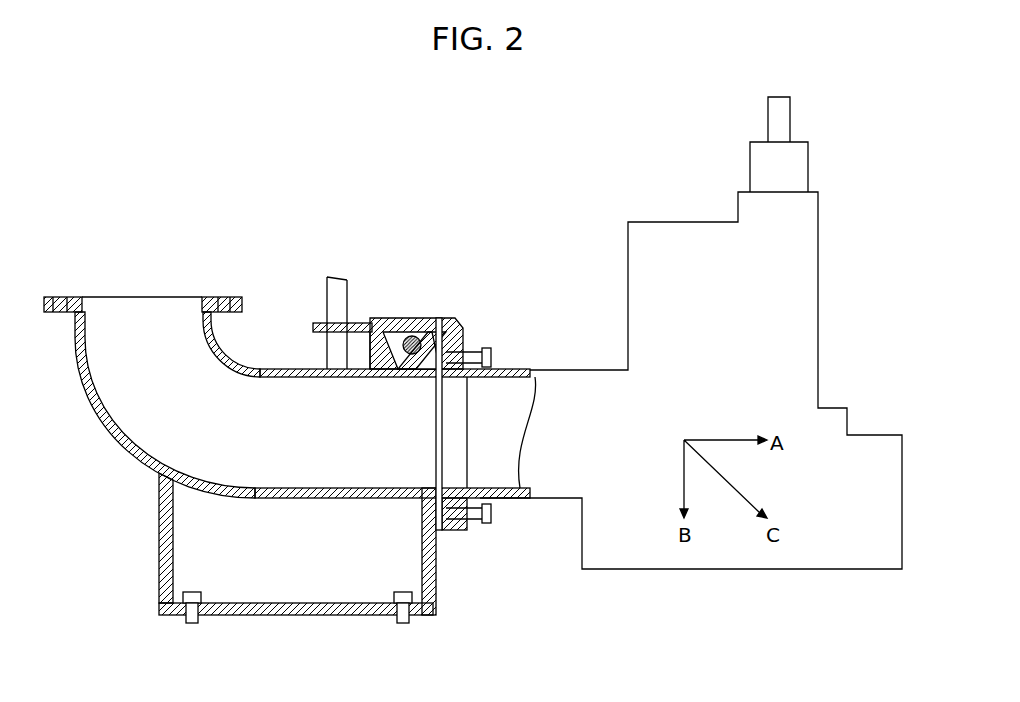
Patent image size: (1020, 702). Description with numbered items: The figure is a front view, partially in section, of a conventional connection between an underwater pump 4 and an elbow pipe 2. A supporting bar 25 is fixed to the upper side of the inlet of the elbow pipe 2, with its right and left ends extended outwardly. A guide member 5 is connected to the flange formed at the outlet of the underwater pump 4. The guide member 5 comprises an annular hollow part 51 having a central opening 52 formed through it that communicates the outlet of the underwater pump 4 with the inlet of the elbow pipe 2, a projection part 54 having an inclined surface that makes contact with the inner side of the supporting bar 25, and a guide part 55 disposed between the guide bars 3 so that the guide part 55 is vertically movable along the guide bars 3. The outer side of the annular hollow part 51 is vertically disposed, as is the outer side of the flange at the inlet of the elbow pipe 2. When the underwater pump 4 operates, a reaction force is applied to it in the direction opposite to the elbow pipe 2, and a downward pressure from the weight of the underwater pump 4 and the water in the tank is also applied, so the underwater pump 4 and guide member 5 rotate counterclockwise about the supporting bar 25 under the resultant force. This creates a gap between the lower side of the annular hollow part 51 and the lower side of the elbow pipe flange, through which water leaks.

The elbow pipe 2 is at (115, 430).
The guide bars 3 is at (332, 295).
The underwater pump 4 is at (669, 246).
The guide member 5 is at (403, 316).
The supporting bar 25 is at (418, 336).
The annular hollow part 51 is at (450, 320).
The central opening 52 is at (455, 428).
The projection part 54 is at (370, 348).
The guide part 55 is at (357, 322).